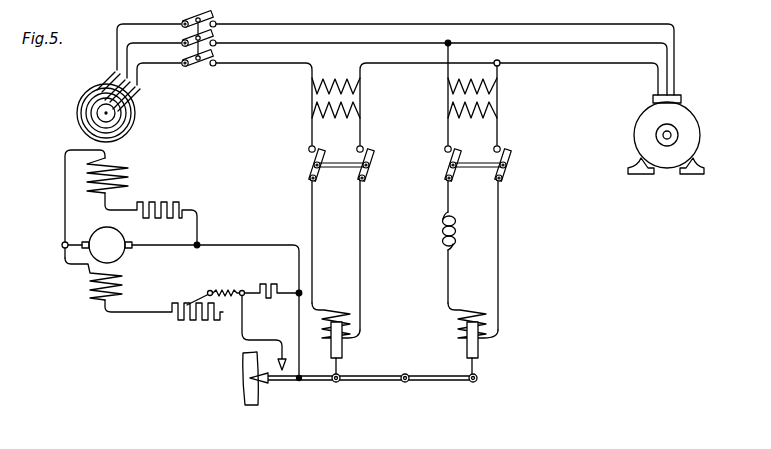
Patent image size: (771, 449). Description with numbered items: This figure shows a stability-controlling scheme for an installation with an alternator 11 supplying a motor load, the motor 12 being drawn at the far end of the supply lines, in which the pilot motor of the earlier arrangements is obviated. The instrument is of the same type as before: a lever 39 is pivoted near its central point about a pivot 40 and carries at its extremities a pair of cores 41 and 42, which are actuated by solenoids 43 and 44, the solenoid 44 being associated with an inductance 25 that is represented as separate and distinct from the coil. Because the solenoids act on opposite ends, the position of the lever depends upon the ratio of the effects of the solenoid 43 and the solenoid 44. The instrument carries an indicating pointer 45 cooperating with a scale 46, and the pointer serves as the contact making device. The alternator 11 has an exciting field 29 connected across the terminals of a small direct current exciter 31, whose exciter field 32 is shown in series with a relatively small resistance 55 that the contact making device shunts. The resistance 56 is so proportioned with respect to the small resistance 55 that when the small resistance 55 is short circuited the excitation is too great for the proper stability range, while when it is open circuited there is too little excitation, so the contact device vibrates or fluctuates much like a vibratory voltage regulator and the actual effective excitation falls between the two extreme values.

The alternator 11 is at (90, 90).
The motor 12 is at (690, 113).
The inductance 25 is at (440, 236).
The exciting field 29 is at (125, 165).
The direct current exciter 31 is at (98, 236).
The exciter field 32 is at (122, 280).
The lever 39 is at (447, 383).
The pivot 40 is at (403, 384).
The core 41 is at (343, 352).
The core 42 is at (480, 352).
The solenoid 43 is at (335, 309).
The solenoid 44 is at (469, 309).
The indicating pointer 45 is at (314, 385).
The scale 46 is at (237, 393).
The small resistance 55 is at (266, 284).
The resistance 56 is at (189, 317).